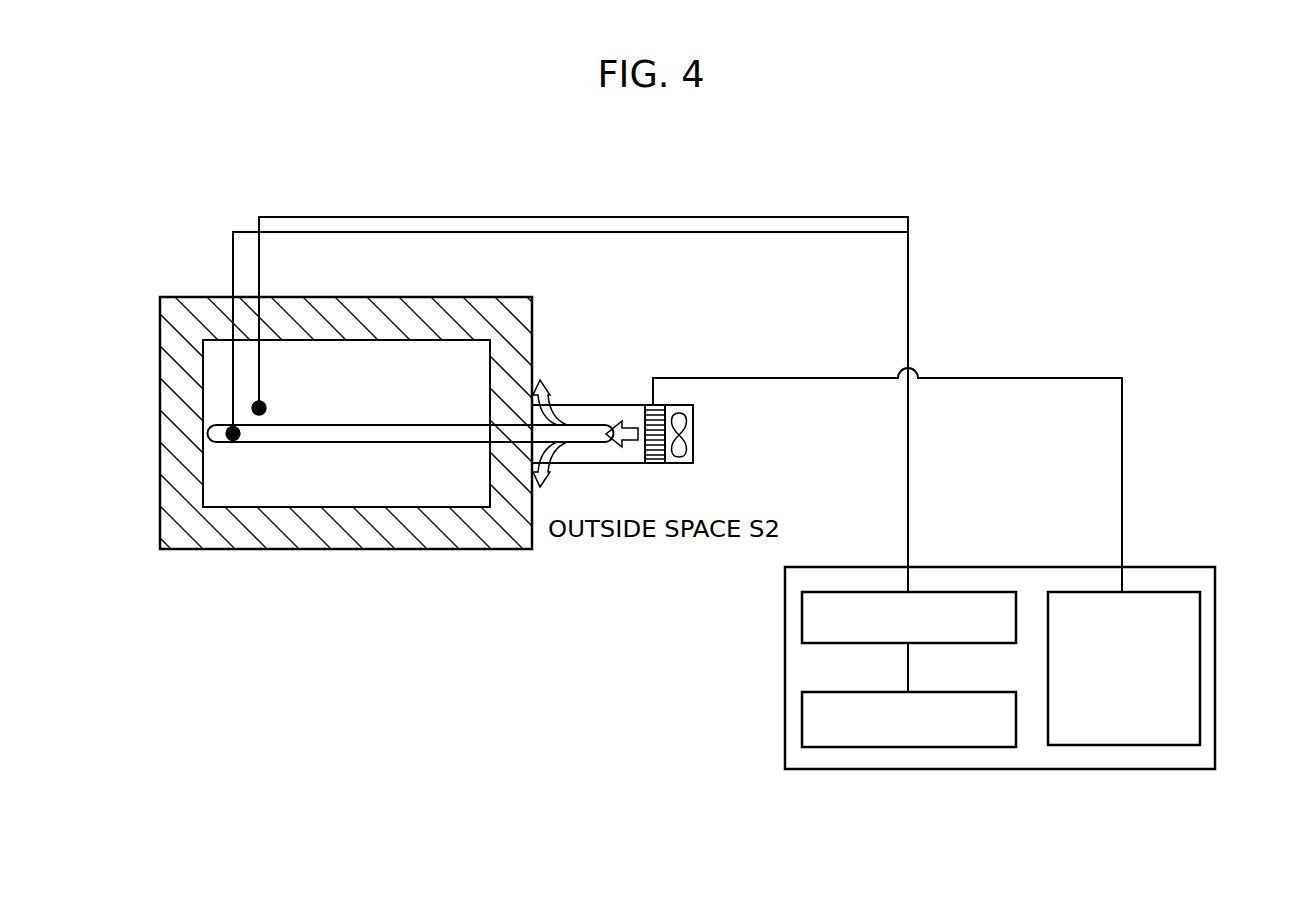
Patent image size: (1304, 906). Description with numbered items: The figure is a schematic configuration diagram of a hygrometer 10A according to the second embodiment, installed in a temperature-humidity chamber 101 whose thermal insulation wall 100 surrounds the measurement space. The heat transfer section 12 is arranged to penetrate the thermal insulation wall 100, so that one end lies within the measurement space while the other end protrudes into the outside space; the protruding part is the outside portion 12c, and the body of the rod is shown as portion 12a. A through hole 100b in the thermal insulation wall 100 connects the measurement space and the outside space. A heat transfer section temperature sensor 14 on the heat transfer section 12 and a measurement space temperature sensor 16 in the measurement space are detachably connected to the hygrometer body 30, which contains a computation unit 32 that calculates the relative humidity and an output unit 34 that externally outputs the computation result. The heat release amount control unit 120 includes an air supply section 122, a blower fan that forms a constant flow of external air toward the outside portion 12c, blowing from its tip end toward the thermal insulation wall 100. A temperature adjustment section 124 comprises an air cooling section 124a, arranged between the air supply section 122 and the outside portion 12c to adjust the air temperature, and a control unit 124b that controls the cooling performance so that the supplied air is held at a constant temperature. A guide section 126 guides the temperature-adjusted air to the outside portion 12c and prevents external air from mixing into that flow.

The hygrometer 10A is at (999, 200).
The thermal insulation wall 100 is at (413, 297).
The through hole 100b is at (551, 447).
The temperature-humidity chamber 101 is at (148, 369).
The heat transfer section 12 is at (411, 420).
The probe tube 12a is at (323, 442).
The outside portion 12c is at (587, 422).
The heat transfer section temperature sensor 14 is at (240, 443).
The measurement space temperature sensor 16 is at (268, 407).
The heat release amount control unit 120 is at (827, 446).
The air supply section 122 is at (695, 428).
The temperature adjustment section 124 is at (827, 446).
The air cooling section 124a is at (655, 464).
The control unit 124b is at (1200, 665).
The guide section 126 is at (612, 403).
The hygrometer body 30 is at (1006, 668).
The computation unit 32 is at (802, 620).
The output unit 34 is at (802, 715).